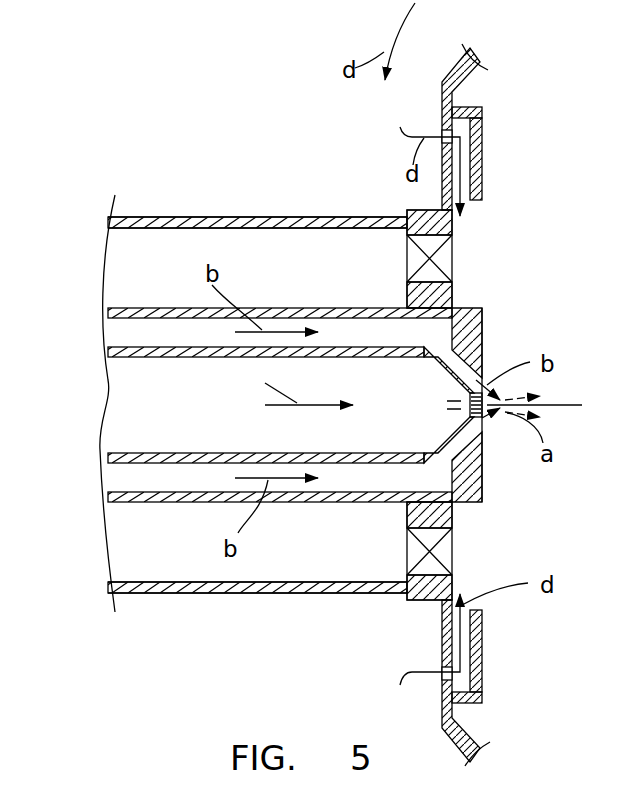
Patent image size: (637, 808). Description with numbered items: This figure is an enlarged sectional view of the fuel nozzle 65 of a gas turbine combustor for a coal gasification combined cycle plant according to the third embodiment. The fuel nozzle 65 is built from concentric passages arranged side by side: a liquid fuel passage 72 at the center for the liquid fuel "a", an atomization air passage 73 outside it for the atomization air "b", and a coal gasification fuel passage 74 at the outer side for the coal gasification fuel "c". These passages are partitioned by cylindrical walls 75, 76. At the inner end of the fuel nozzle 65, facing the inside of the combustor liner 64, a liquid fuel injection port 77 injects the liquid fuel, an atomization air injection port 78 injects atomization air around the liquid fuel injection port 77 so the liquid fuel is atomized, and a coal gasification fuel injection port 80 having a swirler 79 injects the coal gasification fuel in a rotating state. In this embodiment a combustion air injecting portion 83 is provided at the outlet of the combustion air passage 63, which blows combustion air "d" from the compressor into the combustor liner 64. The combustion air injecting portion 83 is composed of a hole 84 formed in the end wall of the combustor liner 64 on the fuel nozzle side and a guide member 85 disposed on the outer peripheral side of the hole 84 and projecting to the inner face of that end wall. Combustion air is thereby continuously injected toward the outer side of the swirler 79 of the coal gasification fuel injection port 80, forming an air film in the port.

The combustion air passage 63 is at (288, 62).
The combustor liner 64 is at (455, 65).
The fuel nozzle 65 is at (186, 210).
The liquid fuel passage 72 is at (118, 423).
The atomization air passage 73 is at (125, 327).
The coal gasification fuel passage 74 is at (130, 263).
The cylindrical wall 75 is at (135, 356).
The cylindrical wall 76 is at (138, 308).
The liquid fuel injection port 77 is at (550, 405).
The atomization air injection port 78 is at (487, 380).
The swirler 79 is at (405, 243).
The coal gasification fuel injection port 80 is at (453, 260).
The combustion air injecting portion 83 is at (492, 125).
The hole 84 is at (445, 133).
The guide member 85 is at (482, 183).